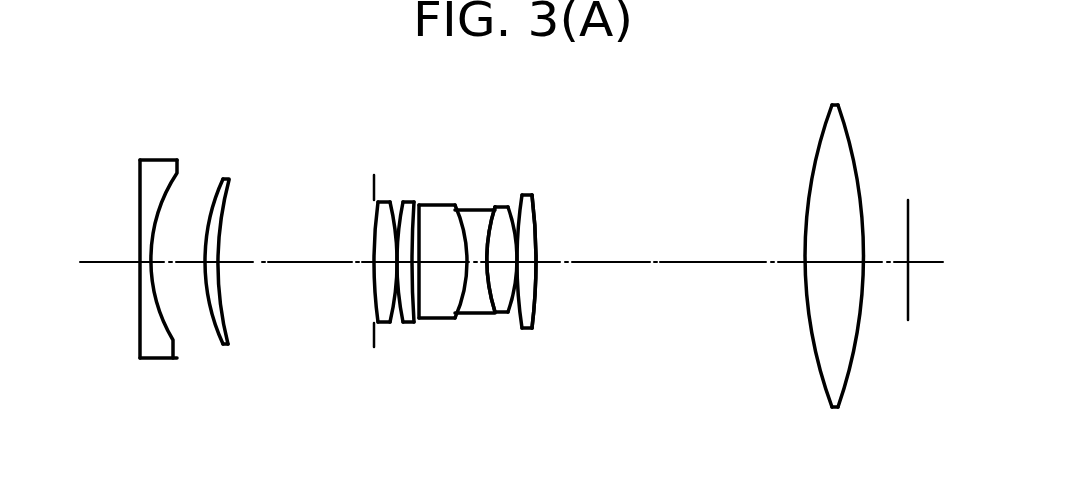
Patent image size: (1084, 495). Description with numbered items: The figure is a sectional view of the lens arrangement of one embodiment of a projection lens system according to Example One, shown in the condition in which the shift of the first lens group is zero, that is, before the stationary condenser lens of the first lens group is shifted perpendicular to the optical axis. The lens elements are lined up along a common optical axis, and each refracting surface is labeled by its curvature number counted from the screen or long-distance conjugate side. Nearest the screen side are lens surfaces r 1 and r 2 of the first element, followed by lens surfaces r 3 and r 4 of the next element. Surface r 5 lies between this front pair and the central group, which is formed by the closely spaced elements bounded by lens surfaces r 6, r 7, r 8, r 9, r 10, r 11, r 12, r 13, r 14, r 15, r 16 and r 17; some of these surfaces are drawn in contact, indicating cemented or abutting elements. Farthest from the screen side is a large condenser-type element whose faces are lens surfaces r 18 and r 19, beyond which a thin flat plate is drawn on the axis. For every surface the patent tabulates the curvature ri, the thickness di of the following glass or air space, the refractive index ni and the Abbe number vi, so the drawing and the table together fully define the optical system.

The lens surface r1 1 is at (138, 328).
The lens surface r2 2 is at (165, 322).
The lens surface r3 3 is at (221, 330).
The lens surface r4 4 is at (223, 320).
The lens surface r5 5 is at (373, 333).
The lens surface r6 6 is at (377, 283).
The lens surface r7 7 is at (398, 320).
The lens surface r8 8 is at (405, 322).
The lens surface r9 9 is at (413, 318).
The lens surface r10 10 is at (453, 305).
The lens surface r11 11 is at (458, 288).
The lens surface r12 12 is at (483, 316).
The lens surface r13 13 is at (505, 315).
The lens surface r14 14 is at (510, 316).
The lens surface r15 15 is at (520, 318).
The lens surface r16 16 is at (532, 307).
The lens surface r17 17 is at (538, 287).
The lens surface r18 18 is at (812, 330).
The lens surface r19 19 is at (853, 366).